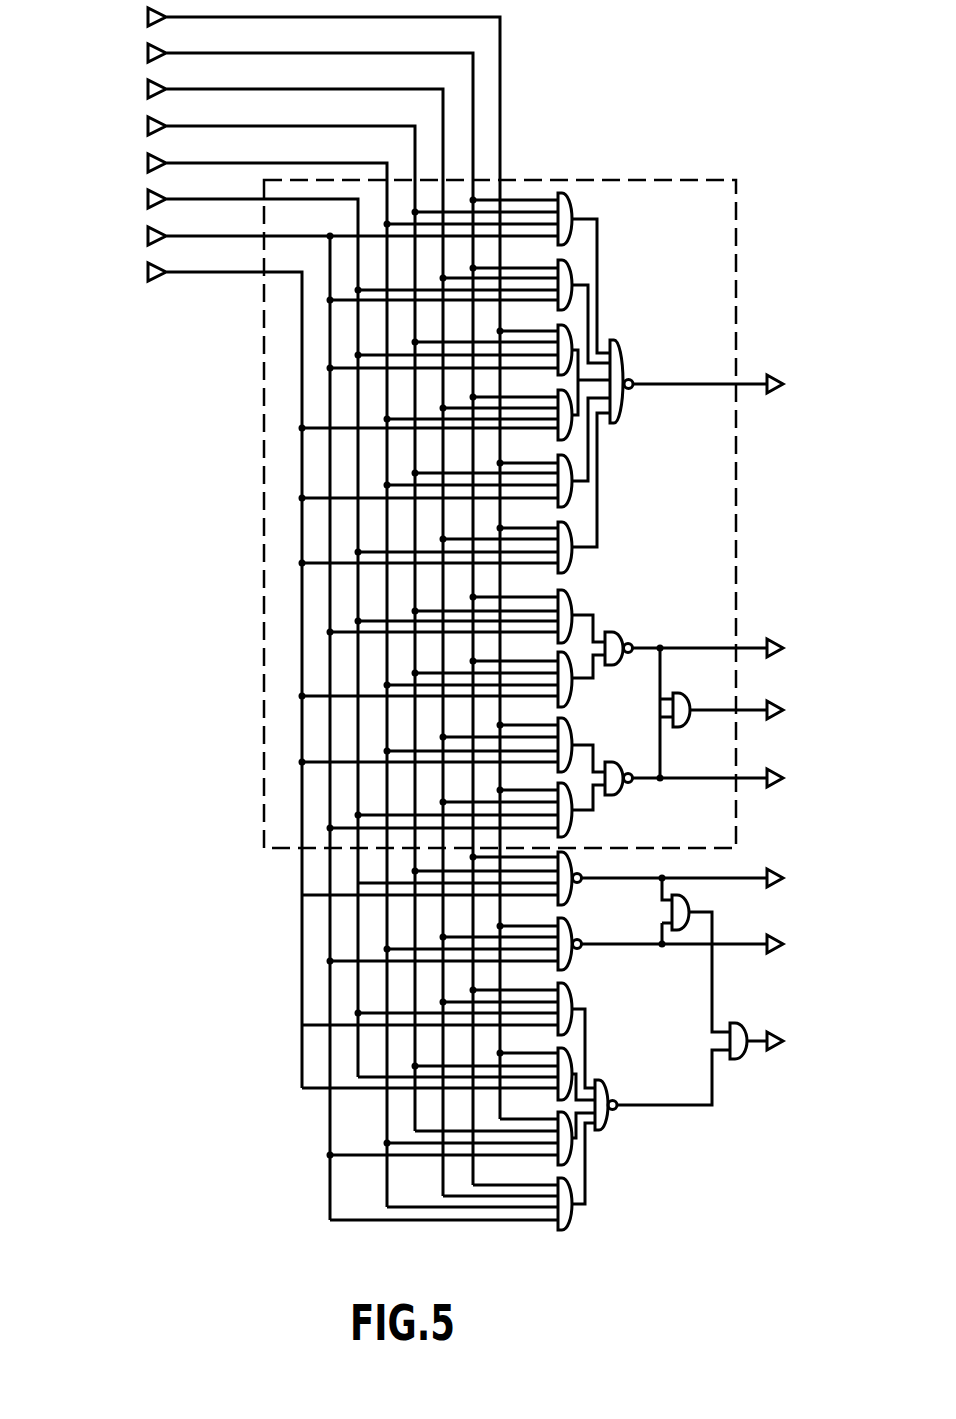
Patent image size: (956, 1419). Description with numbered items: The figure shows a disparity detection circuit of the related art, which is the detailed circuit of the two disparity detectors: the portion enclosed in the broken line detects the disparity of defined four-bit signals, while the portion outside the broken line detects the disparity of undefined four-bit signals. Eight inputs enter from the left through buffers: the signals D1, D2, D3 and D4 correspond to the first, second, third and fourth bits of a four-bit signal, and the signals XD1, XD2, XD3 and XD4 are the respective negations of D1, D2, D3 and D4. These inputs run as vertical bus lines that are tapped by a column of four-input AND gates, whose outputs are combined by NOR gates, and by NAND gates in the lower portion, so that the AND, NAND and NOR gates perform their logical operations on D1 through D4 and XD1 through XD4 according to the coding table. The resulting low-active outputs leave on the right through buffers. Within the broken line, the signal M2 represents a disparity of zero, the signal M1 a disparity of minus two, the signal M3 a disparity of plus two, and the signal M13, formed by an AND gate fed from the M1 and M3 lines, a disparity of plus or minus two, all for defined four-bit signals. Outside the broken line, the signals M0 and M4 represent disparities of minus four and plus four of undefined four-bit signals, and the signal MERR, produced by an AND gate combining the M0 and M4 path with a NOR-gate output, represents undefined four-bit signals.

The D1 bit signal D1 is at (301, 560).
The XD1 negated bit signal XD1 is at (280, 611).
The D2 bit signal D2 is at (273, 635).
The XD2 negated bit signal XD2 is at (251, 621).
The D3 bit signal D3 is at (245, 677).
The XD3 negated bit signal XD3 is at (223, 630).
The D4 bit signal D4 is at (330, 720).
The XD4 negated bit signal XD4 is at (195, 672).
The M2 disparity signal M2 is at (693, 383).
The M1 disparity signal M1 is at (693, 646).
The M13 disparity signal M13 is at (744, 713).
The M3 disparity signal M3 is at (693, 777).
The M0 disparity signal M0 is at (694, 878).
The M4 disparity signal M4 is at (694, 944).
The MERR undefined-signal output MERR is at (707, 1041).